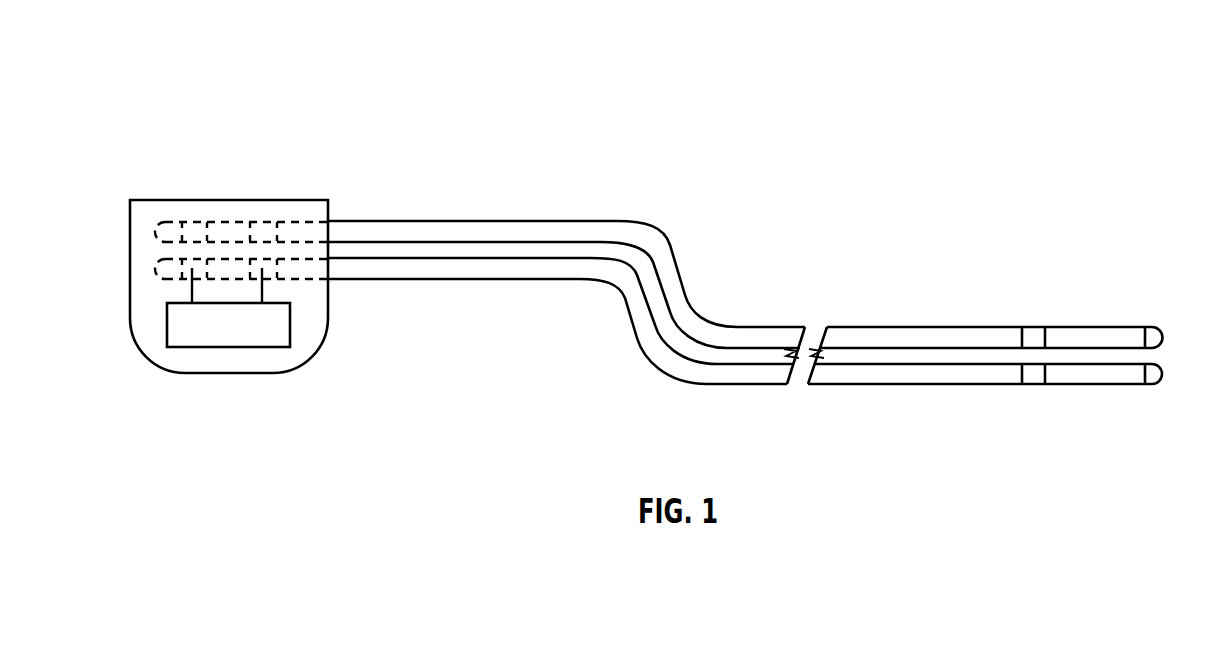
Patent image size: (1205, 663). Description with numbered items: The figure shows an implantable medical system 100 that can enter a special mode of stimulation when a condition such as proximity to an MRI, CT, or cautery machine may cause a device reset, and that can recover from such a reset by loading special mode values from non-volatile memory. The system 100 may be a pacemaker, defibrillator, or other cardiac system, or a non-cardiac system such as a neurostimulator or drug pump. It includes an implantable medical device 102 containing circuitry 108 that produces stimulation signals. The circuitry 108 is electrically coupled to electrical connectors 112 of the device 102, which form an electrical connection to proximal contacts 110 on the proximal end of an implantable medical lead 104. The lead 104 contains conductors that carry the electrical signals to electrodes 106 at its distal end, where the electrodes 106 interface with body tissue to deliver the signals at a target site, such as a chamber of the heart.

The implantable medical system 100 is at (485, 148).
The implantable medical device 102 is at (305, 338).
The implantable medical lead 104 is at (655, 229).
The electrodes 106 is at (1155, 327).
The circuitry 108 is at (290, 322).
The proximal contacts 110 is at (183, 261).
The electrical connectors 112 is at (192, 268).